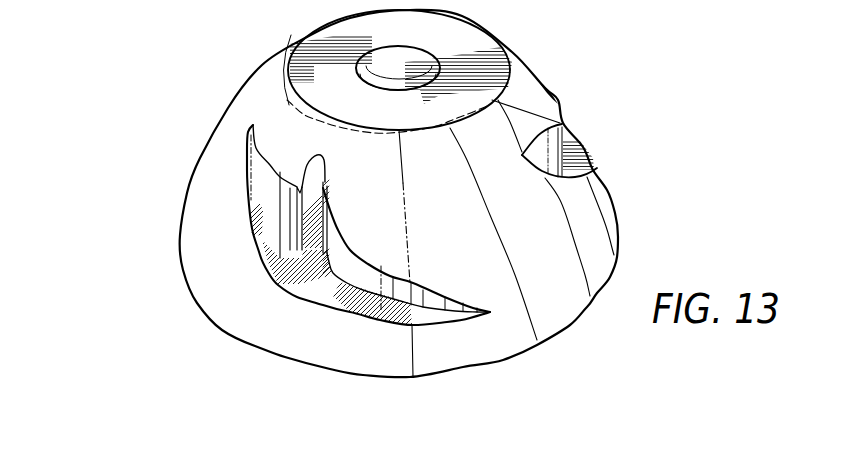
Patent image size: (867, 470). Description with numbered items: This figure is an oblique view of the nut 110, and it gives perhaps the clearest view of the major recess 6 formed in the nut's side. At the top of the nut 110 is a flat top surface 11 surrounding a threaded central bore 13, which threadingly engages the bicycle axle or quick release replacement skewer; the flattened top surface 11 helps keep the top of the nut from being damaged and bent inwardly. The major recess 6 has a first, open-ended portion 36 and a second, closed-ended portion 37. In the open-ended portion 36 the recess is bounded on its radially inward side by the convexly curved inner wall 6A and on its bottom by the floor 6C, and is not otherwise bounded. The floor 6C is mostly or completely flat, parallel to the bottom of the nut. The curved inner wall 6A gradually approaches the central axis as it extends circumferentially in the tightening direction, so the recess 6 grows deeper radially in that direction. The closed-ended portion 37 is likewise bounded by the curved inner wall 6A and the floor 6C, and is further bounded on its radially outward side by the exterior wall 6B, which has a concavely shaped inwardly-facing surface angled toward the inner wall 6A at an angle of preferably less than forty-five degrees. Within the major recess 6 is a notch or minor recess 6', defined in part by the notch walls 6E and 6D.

The dome-shaped body 110 is at (175, 137).
The flat top surface 11 is at (322, 52).
The threaded central bore 13 is at (410, 78).
The major recess 6 is at (321, 225).
The curved inner wall 6A is at (277, 195).
The exterior wall 6B is at (253, 227).
The floor 6C is at (310, 292).
The notch wall 6D is at (322, 247).
The notch wall 6E is at (320, 153).
The notch or minor recess 6' is at (325, 226).
The closed-ended portion 37 is at (250, 182).
The open-ended portion 36 is at (340, 300).